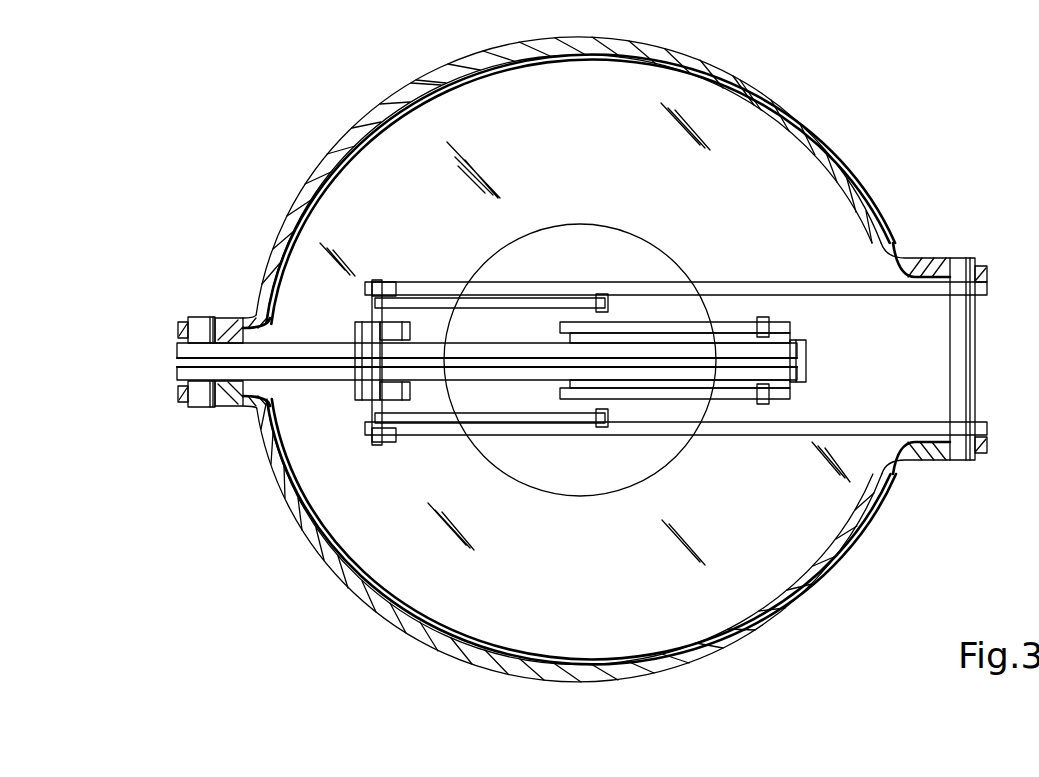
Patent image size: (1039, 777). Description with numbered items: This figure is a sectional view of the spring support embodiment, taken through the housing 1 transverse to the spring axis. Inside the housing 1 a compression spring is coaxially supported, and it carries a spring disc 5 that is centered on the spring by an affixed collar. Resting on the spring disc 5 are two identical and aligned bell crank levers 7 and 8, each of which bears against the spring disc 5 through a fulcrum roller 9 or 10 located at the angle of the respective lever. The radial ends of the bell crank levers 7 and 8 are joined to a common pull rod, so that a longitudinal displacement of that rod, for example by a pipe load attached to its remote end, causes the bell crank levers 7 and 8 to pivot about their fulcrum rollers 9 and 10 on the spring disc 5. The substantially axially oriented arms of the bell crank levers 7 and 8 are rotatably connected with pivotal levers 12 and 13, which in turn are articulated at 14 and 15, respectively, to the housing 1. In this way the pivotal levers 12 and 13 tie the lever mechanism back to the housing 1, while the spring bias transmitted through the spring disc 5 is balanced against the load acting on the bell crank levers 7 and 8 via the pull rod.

The housing 1 is at (745, 68).
The spring disc 5 is at (775, 155).
The bell crank lever 7 is at (440, 298).
The bell crank lever 8 is at (627, 333).
The fulcrum roller 9 is at (365, 335).
The fulcrum roller 10 is at (806, 358).
The pivotal lever 12 is at (852, 282).
The pivotal lever 13 is at (245, 343).
The articulation 14 is at (975, 320).
The articulation 15 is at (190, 322).